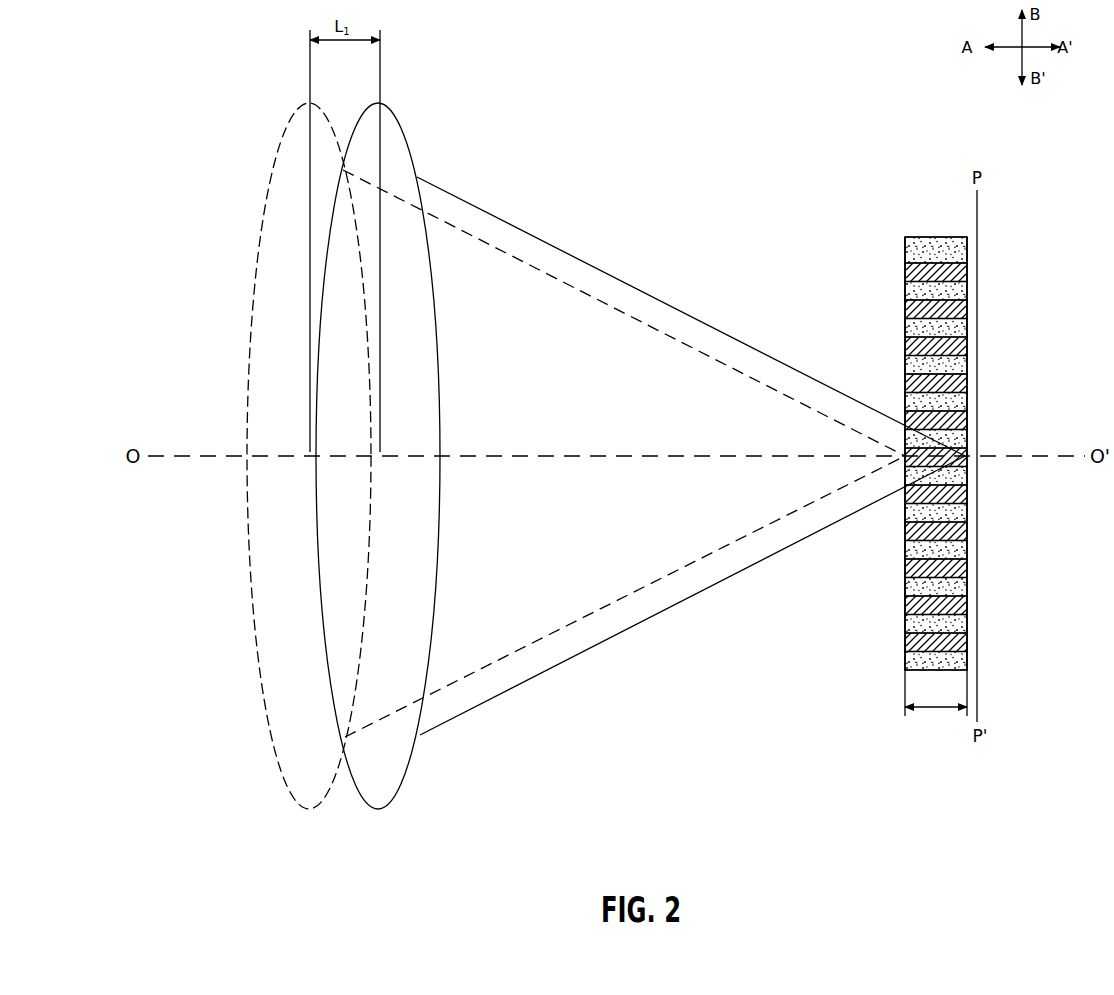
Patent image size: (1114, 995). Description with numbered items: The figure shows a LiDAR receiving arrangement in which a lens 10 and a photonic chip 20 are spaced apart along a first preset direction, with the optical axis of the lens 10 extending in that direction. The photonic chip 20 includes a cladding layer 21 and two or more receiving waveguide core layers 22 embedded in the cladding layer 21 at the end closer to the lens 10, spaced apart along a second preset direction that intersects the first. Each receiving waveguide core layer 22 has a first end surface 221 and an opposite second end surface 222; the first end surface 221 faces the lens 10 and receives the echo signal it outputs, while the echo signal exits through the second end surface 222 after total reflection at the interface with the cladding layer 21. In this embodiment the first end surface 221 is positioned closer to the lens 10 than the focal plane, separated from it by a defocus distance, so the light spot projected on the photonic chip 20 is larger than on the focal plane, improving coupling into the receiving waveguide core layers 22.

The lens 10 is at (287, 125).
The photonic chip 20 is at (940, 458).
The cladding layer 21 is at (933, 248).
The receiving waveguide core layer 22 is at (968, 305).
The first end surface 221 is at (903, 340).
The second end surface 222 is at (967, 343).